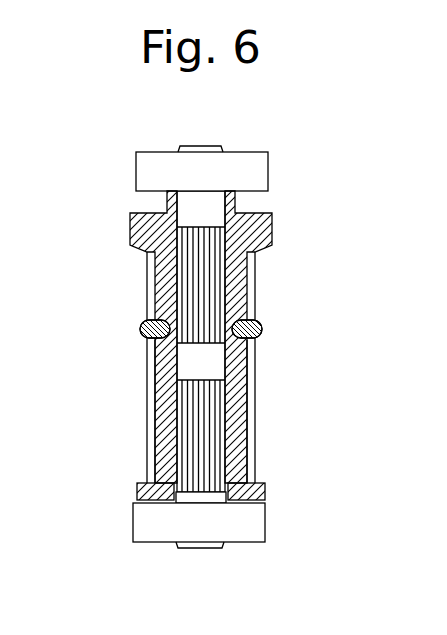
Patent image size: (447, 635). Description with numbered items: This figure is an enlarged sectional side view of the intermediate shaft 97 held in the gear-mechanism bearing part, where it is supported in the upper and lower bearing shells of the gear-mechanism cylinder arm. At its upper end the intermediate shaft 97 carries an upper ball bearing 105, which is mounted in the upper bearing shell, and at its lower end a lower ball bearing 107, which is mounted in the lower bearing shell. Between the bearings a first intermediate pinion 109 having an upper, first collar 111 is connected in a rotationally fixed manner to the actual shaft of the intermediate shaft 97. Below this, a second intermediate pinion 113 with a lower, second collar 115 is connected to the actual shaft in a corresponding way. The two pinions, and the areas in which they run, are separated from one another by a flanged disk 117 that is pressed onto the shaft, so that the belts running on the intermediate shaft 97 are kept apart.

The intermediate shaft 97 is at (231, 344).
The upper ball bearing 105 is at (152, 177).
The lower ball bearing 107 is at (150, 523).
The first intermediate pinion 109 is at (250, 282).
The first collar 111 is at (268, 228).
The second intermediate pinion 113 is at (250, 415).
The second collar 115 is at (257, 488).
The flanged disk 117 is at (262, 330).